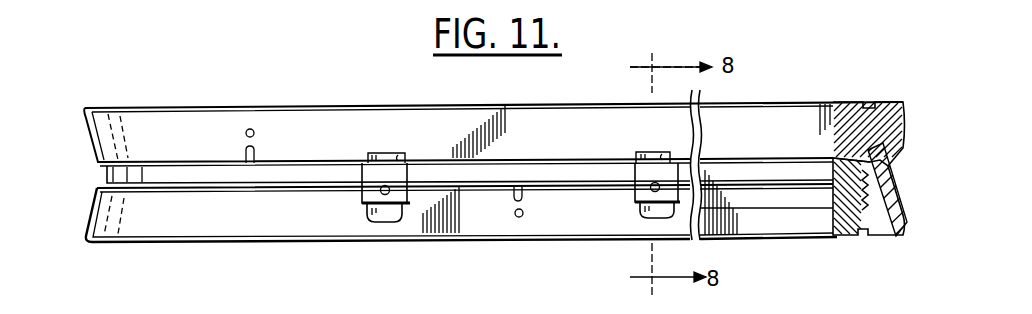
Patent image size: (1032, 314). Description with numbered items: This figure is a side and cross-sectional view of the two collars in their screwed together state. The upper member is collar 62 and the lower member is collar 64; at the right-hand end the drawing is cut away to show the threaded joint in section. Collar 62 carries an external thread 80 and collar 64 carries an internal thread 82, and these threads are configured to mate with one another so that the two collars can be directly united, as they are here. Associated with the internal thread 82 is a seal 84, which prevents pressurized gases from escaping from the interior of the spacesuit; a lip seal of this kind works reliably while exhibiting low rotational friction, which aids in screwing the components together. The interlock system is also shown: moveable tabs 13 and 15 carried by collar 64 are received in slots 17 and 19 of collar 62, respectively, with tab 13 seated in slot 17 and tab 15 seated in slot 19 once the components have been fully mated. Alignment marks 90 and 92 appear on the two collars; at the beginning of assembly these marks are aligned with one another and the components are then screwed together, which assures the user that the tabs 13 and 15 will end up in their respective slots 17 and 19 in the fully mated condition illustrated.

The moveable tab 13 is at (668, 178).
The moveable tab 15 is at (373, 196).
The slot 17 is at (630, 156).
The slot 19 is at (404, 156).
The collar 62 is at (138, 107).
The collar 64 is at (173, 222).
The external thread 80 is at (833, 158).
The internal thread 82 is at (862, 177).
The seal 84 is at (891, 238).
The alignment mark 90 is at (257, 151).
The alignment mark 92 is at (524, 195).